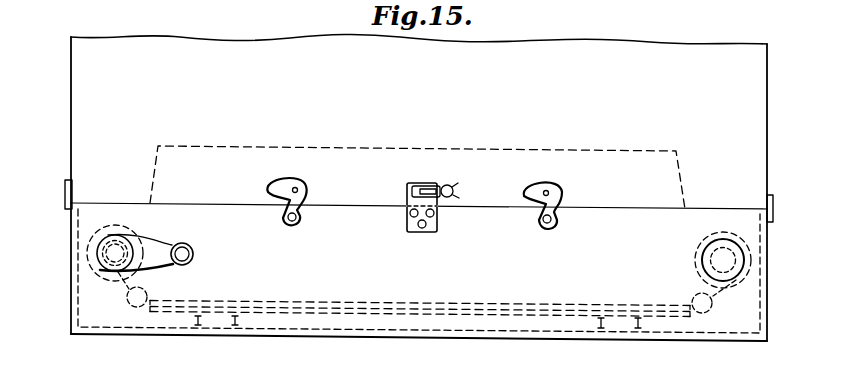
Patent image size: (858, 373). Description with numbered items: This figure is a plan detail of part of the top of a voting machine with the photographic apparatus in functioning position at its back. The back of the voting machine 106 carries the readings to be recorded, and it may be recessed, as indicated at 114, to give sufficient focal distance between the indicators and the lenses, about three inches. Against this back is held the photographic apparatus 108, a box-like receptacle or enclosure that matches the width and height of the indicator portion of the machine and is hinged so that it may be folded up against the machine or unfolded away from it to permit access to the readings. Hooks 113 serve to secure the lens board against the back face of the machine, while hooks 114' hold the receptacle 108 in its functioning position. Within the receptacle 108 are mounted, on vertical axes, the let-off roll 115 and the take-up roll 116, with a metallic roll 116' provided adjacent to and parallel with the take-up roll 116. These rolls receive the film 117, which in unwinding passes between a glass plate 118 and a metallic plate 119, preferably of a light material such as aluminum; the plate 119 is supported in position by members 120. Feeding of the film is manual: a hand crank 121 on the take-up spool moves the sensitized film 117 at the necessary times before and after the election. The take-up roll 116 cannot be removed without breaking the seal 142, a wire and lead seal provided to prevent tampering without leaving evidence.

The back of voting machine 106 is at (772, 100).
The photographic apparatus 108 is at (332, 338).
The hooks 113 is at (65, 187).
The recess 114 is at (417, 165).
The hooks 114' is at (437, 201).
The let-off roll 115 is at (702, 254).
The take-up roll 116 is at (135, 253).
The metallic roll 116' is at (158, 289).
The film 117 is at (716, 296).
The glass plate 118 is at (468, 307).
The metallic plate 119 is at (622, 325).
The members 120 is at (221, 314).
The hand crank 121 is at (157, 248).
The seal 142 is at (453, 191).